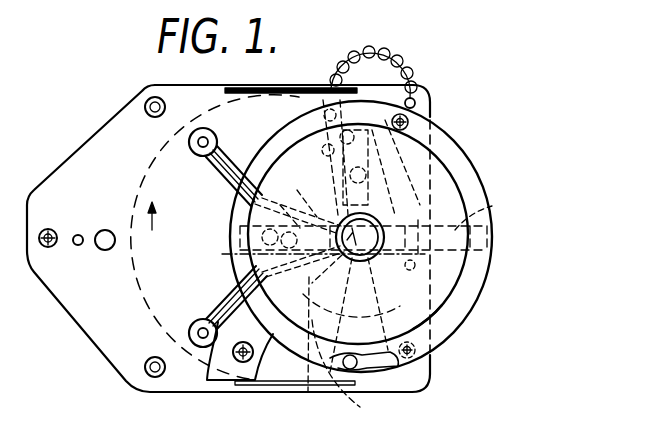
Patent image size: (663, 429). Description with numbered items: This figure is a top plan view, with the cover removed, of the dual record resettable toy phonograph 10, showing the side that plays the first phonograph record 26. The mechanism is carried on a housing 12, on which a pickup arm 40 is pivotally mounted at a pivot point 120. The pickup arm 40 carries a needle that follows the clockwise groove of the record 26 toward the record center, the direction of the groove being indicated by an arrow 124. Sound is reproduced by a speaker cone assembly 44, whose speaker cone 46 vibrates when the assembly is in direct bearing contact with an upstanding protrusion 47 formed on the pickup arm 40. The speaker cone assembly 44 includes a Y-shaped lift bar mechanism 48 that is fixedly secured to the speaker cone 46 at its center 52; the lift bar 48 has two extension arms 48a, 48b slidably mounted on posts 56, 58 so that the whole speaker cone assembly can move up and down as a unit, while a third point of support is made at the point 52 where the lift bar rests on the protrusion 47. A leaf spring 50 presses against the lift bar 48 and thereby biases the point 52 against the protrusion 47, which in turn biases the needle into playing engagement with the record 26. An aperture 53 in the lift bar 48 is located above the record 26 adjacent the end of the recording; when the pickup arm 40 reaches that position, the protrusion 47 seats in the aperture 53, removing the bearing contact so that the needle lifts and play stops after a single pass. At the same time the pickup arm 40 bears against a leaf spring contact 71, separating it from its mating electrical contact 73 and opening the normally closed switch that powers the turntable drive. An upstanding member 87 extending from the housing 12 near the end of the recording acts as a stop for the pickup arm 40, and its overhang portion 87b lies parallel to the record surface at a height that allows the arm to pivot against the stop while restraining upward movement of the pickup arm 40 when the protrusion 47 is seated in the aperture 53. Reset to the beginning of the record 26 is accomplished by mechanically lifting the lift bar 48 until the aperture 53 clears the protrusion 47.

The dual record resettable toy phonograph 10 is at (320, 54).
The housing 12 is at (433, 373).
The phonograph record 26 is at (137, 189).
The pickup arm 40 is at (433, 325).
The speaker cone assembly 44 is at (461, 136).
The speaker cone 46 is at (477, 301).
The upstanding protrusion 47 is at (333, 272).
The Y-shaped lift bar mechanism 48 is at (230, 190).
The extension arm 48a is at (210, 161).
The extension arm 48b is at (211, 315).
The leaf spring 50 is at (207, 393).
The center of speaker cone 52 is at (383, 223).
The aperture 53 is at (331, 186).
The post 56 is at (189, 143).
The post 58 is at (189, 333).
The leaf spring contact 71 is at (318, 122).
The electrical contact 73 is at (375, 147).
The upstanding member 87 is at (349, 351).
The overhang portion 87b is at (335, 395).
The pivot point 120 is at (404, 395).
The arrow 124 is at (152, 228).